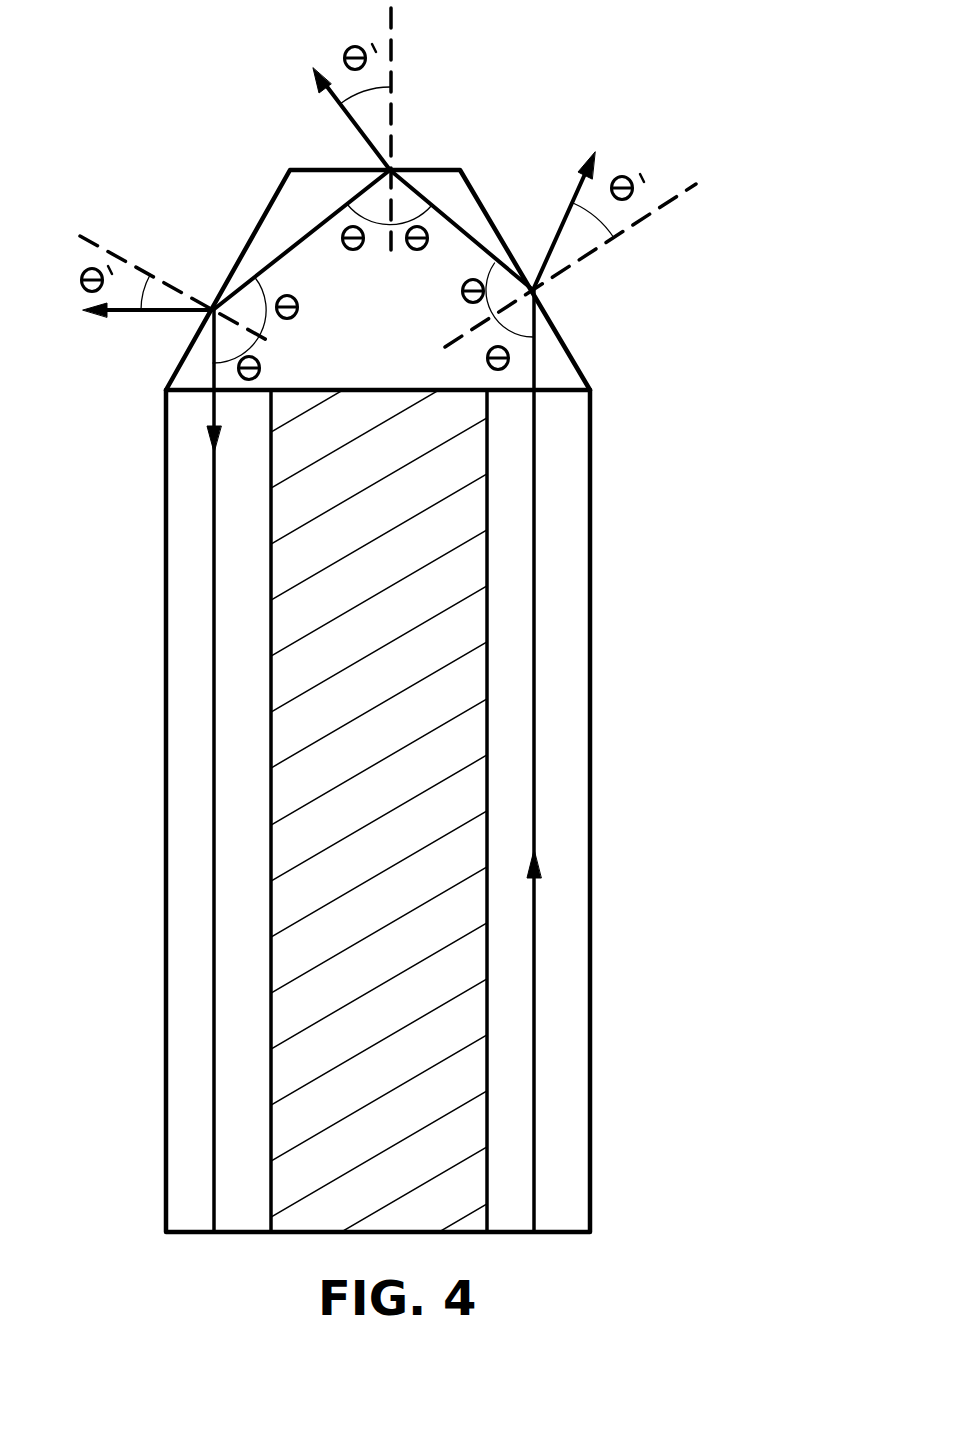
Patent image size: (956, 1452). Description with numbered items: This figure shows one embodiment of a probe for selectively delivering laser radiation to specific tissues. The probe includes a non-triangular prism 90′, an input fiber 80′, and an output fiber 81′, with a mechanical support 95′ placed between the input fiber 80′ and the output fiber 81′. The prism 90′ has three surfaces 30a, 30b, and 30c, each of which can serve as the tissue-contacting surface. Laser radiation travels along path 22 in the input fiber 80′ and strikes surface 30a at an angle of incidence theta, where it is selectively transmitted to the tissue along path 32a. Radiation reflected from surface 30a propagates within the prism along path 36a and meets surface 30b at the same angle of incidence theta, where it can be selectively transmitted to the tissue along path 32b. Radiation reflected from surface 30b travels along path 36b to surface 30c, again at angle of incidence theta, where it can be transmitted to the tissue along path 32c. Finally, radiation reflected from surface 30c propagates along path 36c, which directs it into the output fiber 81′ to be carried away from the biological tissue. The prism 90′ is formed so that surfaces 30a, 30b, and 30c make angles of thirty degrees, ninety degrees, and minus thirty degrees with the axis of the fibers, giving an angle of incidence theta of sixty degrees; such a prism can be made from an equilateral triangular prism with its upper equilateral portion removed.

The path 22 is at (536, 617).
The surface 30a is at (480, 202).
The surface 30b is at (303, 168).
The surface 30c is at (174, 376).
The path 32a is at (547, 275).
The path 32b is at (378, 150).
The path 32c is at (172, 308).
The path 36a is at (455, 230).
The path 36b is at (300, 243).
The path 36c is at (216, 378).
The input fiber 80′ is at (590, 1123).
The output fiber 81′ is at (198, 1083).
The non-triangular prism 90′ is at (590, 400).
The mechanical support 95′ is at (440, 744).